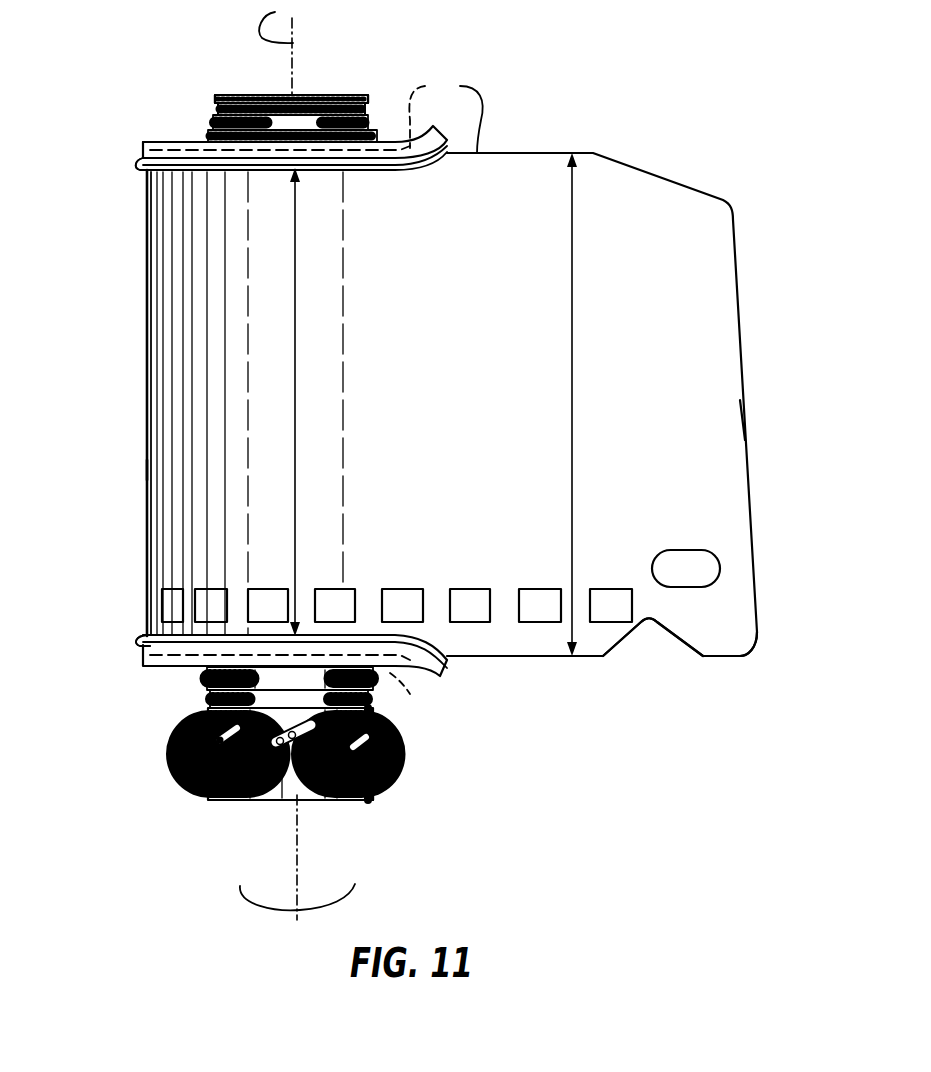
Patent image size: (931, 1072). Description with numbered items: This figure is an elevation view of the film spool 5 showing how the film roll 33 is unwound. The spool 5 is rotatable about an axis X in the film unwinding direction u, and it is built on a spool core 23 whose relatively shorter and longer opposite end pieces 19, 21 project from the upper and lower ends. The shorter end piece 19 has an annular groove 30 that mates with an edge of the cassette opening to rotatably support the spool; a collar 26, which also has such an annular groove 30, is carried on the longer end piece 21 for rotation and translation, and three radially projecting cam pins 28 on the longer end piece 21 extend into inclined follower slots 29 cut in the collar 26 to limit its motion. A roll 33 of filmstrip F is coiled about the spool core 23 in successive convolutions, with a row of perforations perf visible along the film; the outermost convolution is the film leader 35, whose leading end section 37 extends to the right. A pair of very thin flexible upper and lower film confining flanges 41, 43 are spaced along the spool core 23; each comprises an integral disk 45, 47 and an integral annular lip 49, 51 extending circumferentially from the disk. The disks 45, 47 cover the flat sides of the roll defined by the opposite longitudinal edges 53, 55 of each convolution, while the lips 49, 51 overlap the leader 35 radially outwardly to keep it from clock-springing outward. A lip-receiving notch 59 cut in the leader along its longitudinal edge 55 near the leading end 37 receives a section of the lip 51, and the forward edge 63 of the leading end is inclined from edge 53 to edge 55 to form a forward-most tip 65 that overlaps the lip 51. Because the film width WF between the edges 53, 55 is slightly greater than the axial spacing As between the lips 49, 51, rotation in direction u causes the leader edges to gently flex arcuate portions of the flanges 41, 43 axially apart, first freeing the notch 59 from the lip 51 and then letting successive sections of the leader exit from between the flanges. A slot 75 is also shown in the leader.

The axis X is at (267, 8).
The film unwinding direction u is at (348, 878).
The film spool 5 is at (136, 468).
The filmstrip F is at (175, 298).
The shorter end piece 19 is at (350, 98).
The longer end piece 21 is at (264, 758).
The spool core 23 is at (213, 86).
The collar 26 is at (397, 797).
The cam pins 28 is at (204, 740).
The follower slots 29 is at (234, 740).
The annular groove 30 is at (220, 110).
The film roll 33 is at (136, 404).
The film leader 35 is at (147, 264).
The leading end section 37 is at (750, 366).
The upper film confining flange 41 is at (136, 141).
The lower film confining flange 43 is at (134, 668).
The disk 45 is at (188, 140).
The disk 47 is at (165, 667).
The annular lip 49 is at (140, 153).
The annular lip 51 is at (140, 646).
The longitudinal edge 53 is at (445, 112).
The longitudinal edge 55 is at (419, 694).
The lip-receiving notch 59 is at (638, 634).
The forward edge 63 is at (745, 428).
The forward-most tip 65 is at (740, 641).
The leader slot 75 is at (684, 560).
The axial spacing As is at (291, 402).
The film width WF is at (567, 404).
The film perforations perf is at (397, 605).